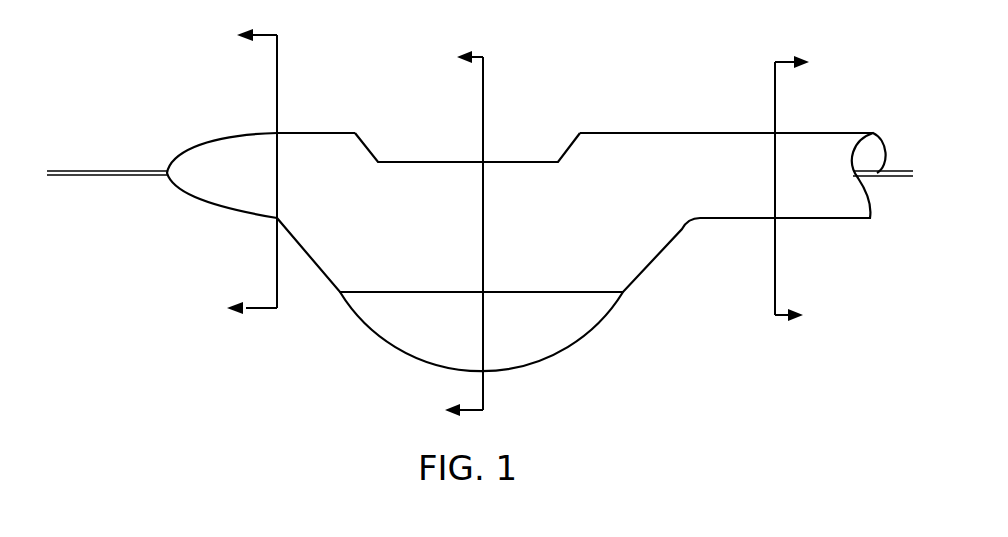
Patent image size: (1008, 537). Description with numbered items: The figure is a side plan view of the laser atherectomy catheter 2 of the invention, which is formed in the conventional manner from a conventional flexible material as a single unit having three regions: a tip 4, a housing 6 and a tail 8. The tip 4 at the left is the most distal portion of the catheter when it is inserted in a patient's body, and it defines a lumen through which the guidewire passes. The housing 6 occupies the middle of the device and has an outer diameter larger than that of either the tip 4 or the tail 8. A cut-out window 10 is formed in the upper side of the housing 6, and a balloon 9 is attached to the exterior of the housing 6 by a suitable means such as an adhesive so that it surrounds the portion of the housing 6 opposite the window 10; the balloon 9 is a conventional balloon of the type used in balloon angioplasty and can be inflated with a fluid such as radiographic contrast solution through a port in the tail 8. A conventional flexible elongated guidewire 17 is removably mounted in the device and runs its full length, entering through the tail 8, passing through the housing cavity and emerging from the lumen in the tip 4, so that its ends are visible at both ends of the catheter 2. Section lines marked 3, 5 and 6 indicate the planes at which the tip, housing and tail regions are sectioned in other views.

The catheter 2 is at (653, 78).
The section line 3- 3 is at (455, 235).
The tip 4 is at (224, 153).
The section line 5- 5 is at (242, 174).
The housing 6 is at (444, 234).
The tail 8 is at (806, 212).
The balloon 9 is at (531, 336).
The cut-out window 10 is at (553, 136).
The guidewire 17 is at (112, 168).